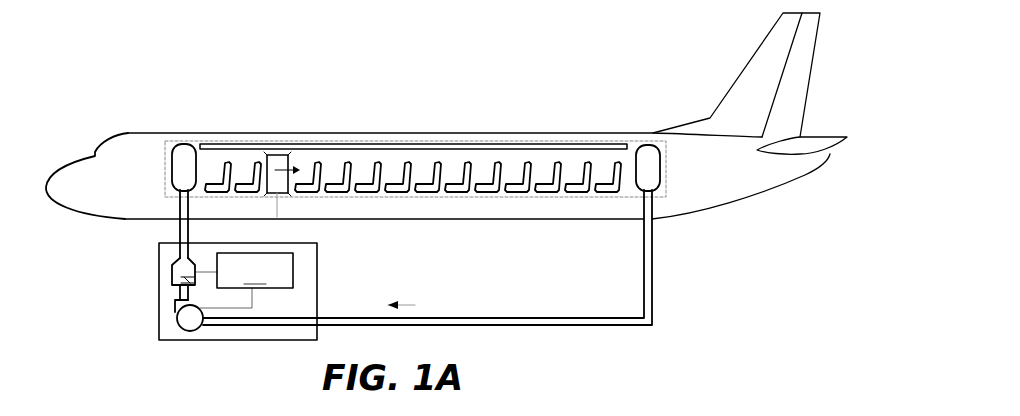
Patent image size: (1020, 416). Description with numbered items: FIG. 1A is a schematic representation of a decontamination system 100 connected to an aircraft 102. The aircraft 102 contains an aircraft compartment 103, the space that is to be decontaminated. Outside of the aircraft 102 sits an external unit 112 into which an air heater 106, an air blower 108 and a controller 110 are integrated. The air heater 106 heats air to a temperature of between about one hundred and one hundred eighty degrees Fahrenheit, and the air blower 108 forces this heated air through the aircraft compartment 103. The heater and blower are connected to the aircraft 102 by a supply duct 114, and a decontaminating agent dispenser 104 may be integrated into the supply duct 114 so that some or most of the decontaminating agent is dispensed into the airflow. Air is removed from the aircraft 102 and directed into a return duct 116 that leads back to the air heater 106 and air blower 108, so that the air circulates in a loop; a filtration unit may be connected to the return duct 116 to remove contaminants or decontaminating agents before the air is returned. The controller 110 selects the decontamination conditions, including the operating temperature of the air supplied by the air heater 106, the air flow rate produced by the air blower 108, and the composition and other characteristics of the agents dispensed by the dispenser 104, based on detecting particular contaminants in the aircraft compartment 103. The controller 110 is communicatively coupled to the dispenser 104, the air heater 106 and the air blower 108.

The aircraft 100 is at (592, 72).
The aircraft 102 is at (123, 150).
The aircraft compartment 103 is at (168, 143).
The decontaminating agent dispenser 104 is at (273, 155).
The air heater 106 is at (170, 277).
The air blower 108 is at (173, 320).
The controller 110 is at (255, 270).
The external unit 112 is at (160, 268).
The supply duct 114 is at (177, 228).
The return duct 116 is at (653, 287).